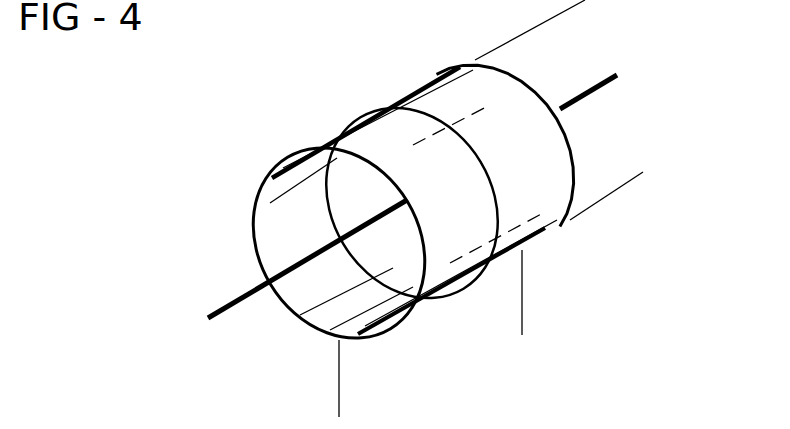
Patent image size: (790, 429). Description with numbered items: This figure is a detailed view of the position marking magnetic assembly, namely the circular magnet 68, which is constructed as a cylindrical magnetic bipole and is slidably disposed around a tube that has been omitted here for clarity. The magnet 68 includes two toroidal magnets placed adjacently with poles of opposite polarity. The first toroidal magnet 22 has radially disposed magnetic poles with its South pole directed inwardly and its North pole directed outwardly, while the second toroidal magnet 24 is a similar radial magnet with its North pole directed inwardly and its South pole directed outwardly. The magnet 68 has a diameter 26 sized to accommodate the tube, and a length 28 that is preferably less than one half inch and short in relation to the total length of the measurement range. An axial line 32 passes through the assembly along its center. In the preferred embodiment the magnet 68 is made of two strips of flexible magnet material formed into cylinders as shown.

The first toroidal magnet 22 is at (367, 143).
The second toroidal magnet 24 is at (453, 92).
The diameter 26 is at (630, 178).
The length 28 is at (342, 399).
The shaft 32 is at (238, 300).
The circular magnet 68 is at (578, 256).